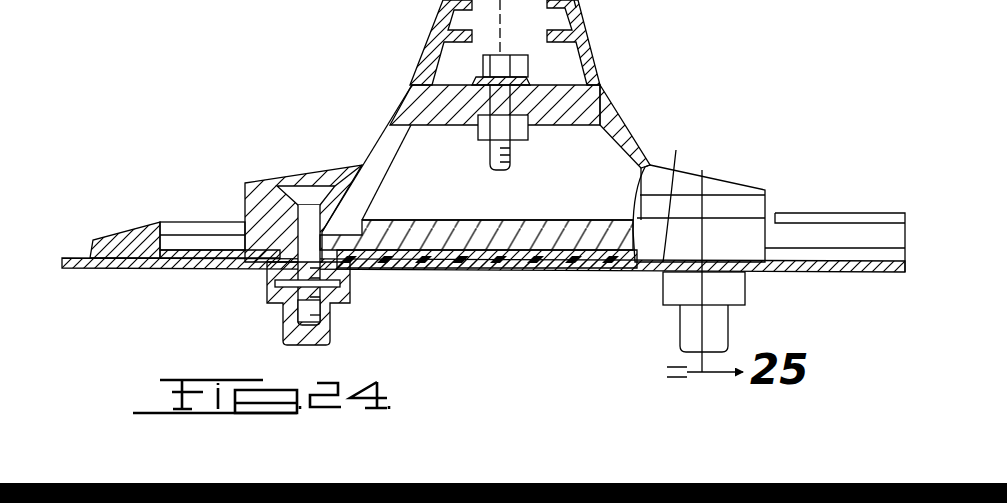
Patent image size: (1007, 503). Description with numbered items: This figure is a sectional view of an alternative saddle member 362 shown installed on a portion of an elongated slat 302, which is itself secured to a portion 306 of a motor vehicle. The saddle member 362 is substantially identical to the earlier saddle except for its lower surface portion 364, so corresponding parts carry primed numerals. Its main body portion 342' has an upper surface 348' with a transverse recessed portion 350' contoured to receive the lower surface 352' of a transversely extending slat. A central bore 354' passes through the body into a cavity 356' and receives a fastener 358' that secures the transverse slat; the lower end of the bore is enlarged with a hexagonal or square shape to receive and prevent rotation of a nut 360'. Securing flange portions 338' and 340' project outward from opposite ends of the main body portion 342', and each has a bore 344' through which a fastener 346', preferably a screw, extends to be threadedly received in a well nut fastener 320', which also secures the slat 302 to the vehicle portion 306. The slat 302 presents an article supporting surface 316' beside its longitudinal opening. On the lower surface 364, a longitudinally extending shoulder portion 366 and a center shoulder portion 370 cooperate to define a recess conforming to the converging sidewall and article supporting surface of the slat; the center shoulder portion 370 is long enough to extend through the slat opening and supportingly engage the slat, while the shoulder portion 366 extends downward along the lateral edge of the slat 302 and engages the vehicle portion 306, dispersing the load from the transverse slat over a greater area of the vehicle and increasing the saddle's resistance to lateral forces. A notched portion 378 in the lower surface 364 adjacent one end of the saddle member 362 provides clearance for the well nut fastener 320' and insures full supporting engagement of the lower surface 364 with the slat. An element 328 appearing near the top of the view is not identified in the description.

The elongated slat 302 is at (170, 218).
The article supporting surface 316' is at (220, 214).
The securing flange portion 338' is at (289, 193).
The fastener 346' is at (308, 215).
The bore 344' is at (350, 160).
The well nut fastener 320' is at (544, 303).
The notched portion 378 is at (270, 252).
The center shoulder portion 370 is at (254, 249).
The main body portion 342' is at (513, 159).
The cavity 356' is at (497, 196).
The lower surface of transversely extending slat 352' is at (459, 98).
The upper surface 348' is at (666, 102).
The saddle member 362 is at (672, 116).
The fastener 358' is at (505, 85).
The nut 360' is at (465, 138).
The transverse recessed portion 350' is at (408, 42).
The central bore 354' is at (603, 42).
The bracket 328 is at (584, 22).
The securing flange portion 340' is at (731, 200).
The lower surface portion 364 is at (694, 195).
The shoulder portion 366 is at (687, 248).
The portion of a motor vehicle 306 is at (845, 248).